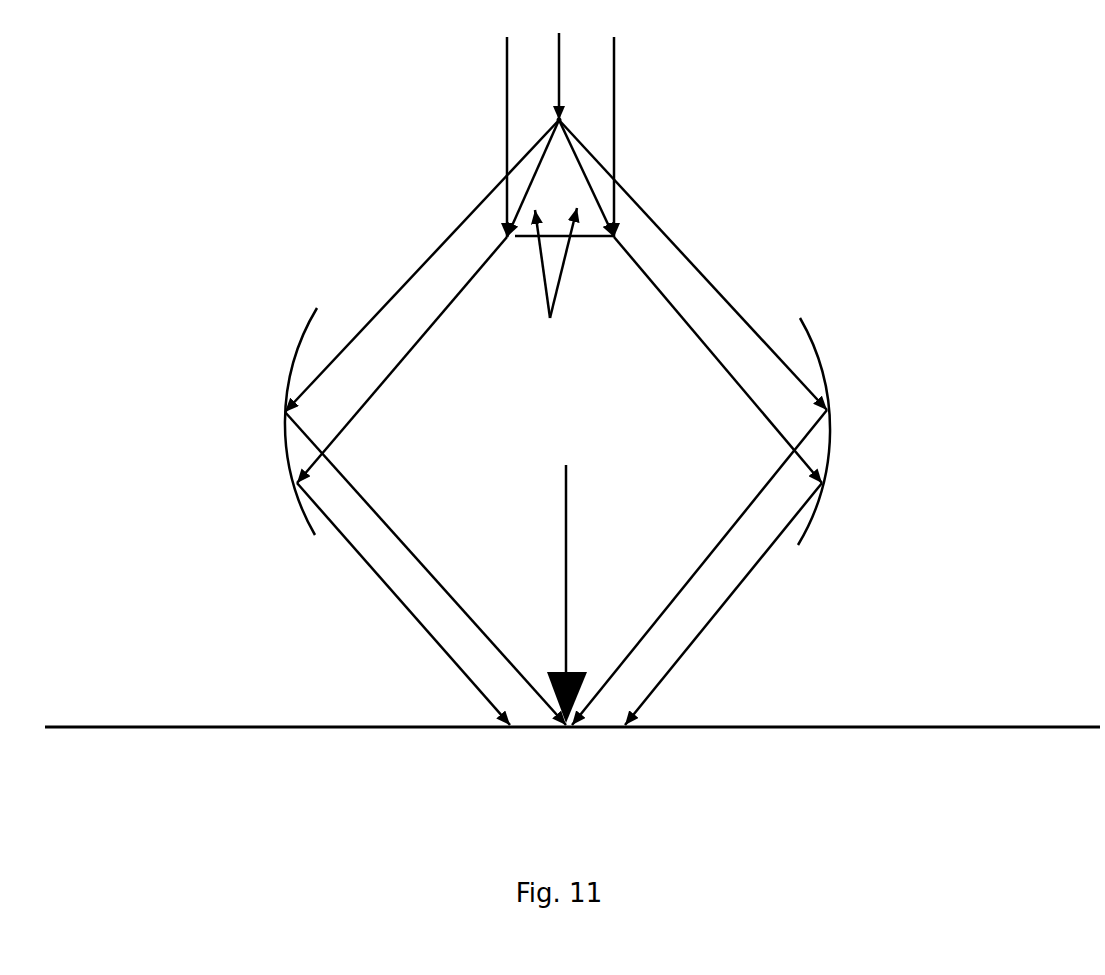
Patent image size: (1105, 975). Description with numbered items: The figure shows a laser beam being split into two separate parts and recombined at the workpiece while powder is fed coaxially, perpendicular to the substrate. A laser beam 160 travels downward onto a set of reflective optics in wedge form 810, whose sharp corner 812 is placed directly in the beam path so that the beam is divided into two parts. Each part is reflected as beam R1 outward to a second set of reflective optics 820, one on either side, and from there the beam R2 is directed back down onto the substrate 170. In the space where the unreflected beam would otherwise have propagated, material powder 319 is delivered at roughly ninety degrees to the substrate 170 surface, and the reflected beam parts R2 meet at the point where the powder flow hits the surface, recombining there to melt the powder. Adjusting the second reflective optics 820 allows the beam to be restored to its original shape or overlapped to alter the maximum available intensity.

The laser beam 160 is at (614, 93).
The sharp corner 812 is at (558, 124).
The reflective optics in wedge form 810 is at (556, 280).
The second set of reflective optics 820 is at (286, 440).
The material powder 319 is at (658, 765).
The substrate 170 is at (702, 725).
The reflected beam R1 is at (375, 317).
The beam directed at the substrate R2 is at (428, 568).